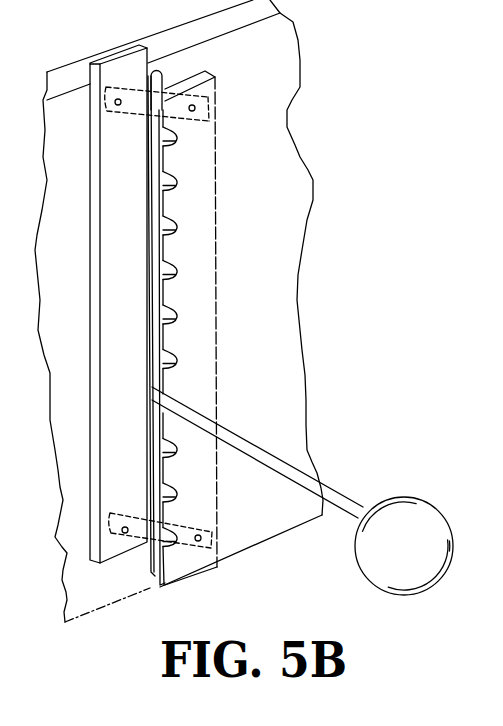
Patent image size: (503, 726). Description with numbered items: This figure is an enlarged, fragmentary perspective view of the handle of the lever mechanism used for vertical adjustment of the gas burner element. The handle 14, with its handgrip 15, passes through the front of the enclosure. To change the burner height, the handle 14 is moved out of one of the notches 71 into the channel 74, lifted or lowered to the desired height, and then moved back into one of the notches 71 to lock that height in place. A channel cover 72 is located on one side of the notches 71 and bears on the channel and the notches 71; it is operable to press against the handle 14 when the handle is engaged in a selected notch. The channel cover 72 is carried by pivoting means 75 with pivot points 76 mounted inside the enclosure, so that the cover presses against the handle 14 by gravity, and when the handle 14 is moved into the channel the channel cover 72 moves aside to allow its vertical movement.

The handle 14 is at (347, 498).
The handgrip 15 is at (410, 518).
The notches 71 is at (165, 313).
The channel cover 72 is at (120, 258).
The channel 74 is at (157, 221).
The pivoting means 75 is at (130, 110).
The pivot points 76 is at (116, 106).